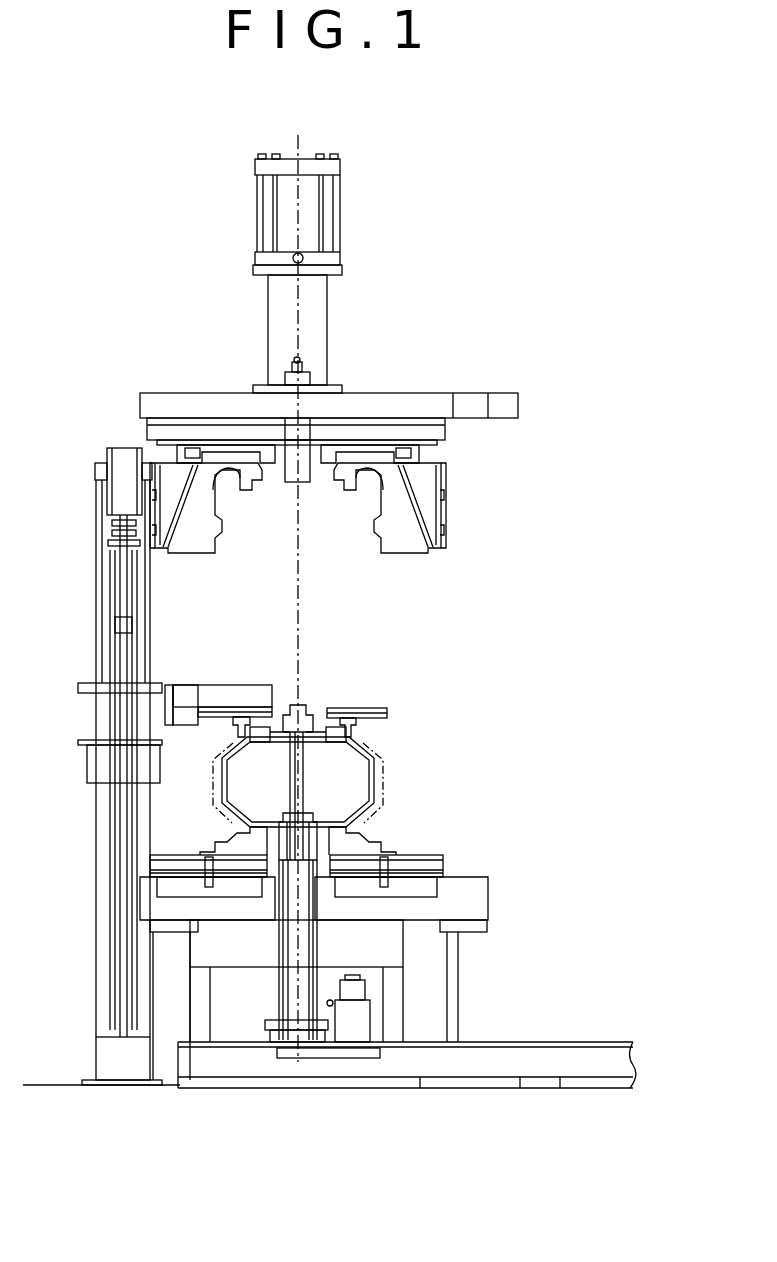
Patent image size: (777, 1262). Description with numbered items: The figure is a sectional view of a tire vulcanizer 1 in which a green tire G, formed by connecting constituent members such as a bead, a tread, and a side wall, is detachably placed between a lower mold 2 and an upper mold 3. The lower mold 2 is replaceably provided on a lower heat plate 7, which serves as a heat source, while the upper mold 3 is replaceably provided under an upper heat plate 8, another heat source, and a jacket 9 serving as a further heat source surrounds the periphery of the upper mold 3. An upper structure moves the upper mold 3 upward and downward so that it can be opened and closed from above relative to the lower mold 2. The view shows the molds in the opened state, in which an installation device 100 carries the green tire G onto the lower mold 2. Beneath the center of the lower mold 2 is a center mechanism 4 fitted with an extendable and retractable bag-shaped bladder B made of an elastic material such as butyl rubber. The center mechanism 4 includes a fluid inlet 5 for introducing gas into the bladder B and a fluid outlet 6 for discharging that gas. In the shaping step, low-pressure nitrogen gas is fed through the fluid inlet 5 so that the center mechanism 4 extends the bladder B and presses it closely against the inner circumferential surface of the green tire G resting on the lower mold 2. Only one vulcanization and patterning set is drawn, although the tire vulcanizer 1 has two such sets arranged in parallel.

The tire vulcanizer 1 is at (472, 210).
The upper heat plate 8 is at (365, 452).
The upper mold 3 is at (428, 476).
The jacket 9 is at (442, 510).
The installation device 100 is at (375, 699).
The green tire G is at (382, 757).
The bladder B is at (373, 787).
The lower mold 2 is at (380, 847).
The lower heat plate 7 is at (432, 857).
The fluid inlet 5 is at (273, 887).
The fluid outlet 6 is at (313, 887).
The center mechanism 4 is at (282, 990).